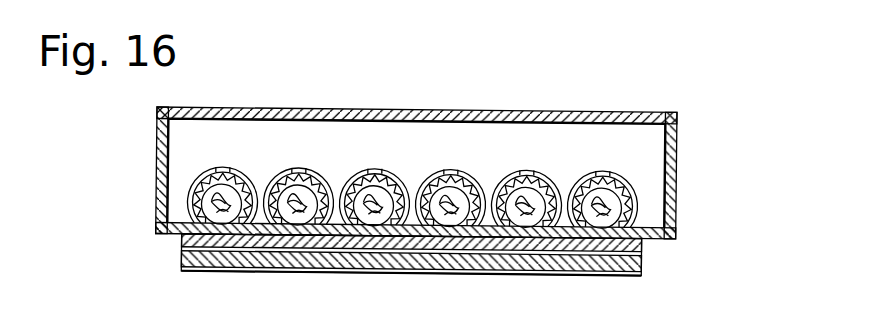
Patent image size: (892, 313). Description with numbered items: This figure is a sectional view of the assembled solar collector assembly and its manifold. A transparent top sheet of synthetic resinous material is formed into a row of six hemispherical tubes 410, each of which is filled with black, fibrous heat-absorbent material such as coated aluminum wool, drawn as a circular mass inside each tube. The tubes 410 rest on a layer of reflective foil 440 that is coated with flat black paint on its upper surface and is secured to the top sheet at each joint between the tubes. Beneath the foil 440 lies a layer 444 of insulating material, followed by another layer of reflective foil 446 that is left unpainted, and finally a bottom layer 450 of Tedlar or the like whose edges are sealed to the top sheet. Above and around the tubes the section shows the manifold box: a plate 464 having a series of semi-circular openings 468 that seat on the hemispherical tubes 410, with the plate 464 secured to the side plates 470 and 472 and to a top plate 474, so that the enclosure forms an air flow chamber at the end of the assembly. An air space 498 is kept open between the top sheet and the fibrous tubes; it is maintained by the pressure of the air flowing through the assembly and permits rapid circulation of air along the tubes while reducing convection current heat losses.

The hemispherical tubes 410 is at (300, 167).
The layer of reflective foil 440 is at (643, 253).
The layer of insulating material 444 is at (470, 243).
The layer of reflective foil 446 is at (407, 262).
The bottom layer 450 is at (270, 271).
The plate 464 is at (508, 138).
The semi-circular openings 468 is at (225, 167).
The side plate 470 is at (673, 168).
The side plate 472 is at (157, 158).
The top plate 474 is at (604, 118).
The air space 498 is at (377, 167).